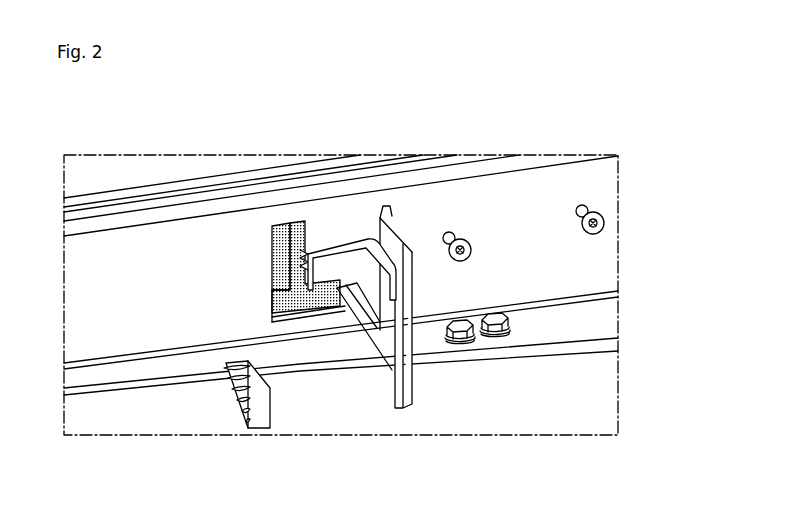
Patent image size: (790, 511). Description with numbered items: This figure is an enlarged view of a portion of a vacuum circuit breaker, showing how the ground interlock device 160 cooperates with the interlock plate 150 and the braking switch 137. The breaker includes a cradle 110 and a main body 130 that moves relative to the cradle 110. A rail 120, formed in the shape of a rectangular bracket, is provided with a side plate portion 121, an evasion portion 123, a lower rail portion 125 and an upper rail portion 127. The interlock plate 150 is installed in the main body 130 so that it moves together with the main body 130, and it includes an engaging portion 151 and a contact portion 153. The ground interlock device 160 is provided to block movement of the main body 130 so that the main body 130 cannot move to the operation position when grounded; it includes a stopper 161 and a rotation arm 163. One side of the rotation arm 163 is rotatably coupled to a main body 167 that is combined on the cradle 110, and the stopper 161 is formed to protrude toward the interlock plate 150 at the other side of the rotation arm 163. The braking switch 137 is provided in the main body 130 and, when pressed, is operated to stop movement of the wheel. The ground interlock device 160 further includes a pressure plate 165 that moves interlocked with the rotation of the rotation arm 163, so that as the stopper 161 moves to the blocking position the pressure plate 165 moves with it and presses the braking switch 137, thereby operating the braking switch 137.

The cradle 110 is at (582, 324).
The rail 120 is at (572, 184).
The side plate portion 121 is at (594, 195).
The evasion portion 123 is at (369, 228).
The lower rail portion 125 is at (285, 322).
The upper rail portion 127 is at (487, 168).
The main body 130 is at (137, 183).
The braking switch 137 is at (301, 250).
The interlock plate 150 is at (278, 276).
The engaging portion 151 is at (243, 314).
The contact portion 153 is at (300, 228).
The ground interlock device 160 is at (398, 340).
The stopper 161 is at (355, 315).
The rotation arm 163 is at (378, 345).
The pressure plate 165 is at (307, 322).
The main body 167 is at (394, 250).